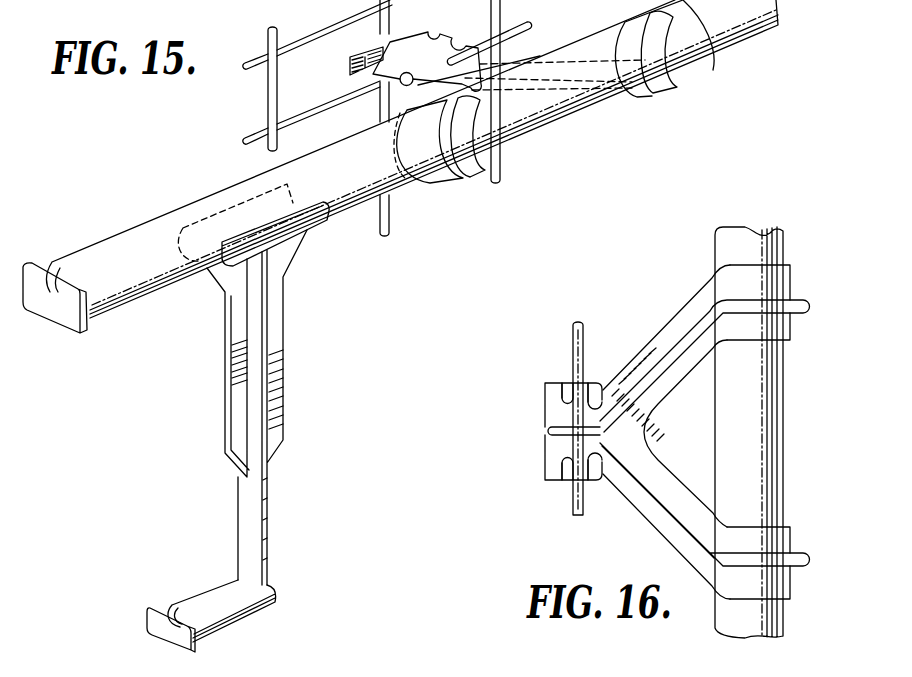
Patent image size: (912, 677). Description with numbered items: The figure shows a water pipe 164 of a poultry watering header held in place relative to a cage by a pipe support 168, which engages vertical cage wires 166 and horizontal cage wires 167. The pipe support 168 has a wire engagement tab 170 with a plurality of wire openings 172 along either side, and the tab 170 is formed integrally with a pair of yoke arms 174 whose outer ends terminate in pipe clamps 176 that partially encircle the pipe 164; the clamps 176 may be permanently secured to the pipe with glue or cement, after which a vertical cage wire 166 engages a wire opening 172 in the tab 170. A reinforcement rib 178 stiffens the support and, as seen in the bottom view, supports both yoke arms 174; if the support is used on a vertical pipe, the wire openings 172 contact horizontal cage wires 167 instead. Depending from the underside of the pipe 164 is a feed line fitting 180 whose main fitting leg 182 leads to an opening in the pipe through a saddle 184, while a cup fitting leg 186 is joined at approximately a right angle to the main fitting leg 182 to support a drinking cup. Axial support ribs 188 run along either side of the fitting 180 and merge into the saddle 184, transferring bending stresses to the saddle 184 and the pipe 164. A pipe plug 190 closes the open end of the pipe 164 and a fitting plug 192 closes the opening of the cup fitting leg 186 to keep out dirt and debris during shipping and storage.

In FIG. 15, the water pipe 164 is at (779, 20).
In FIG. 16, the water pipe 164 is at (775, 500).
In FIG. 16, the vertical cage wire 166 is at (565, 400).
In FIG. 15, the horizontal cage wire 167 is at (257, 132).
In FIG. 16, the horizontal cage wire 167 is at (572, 507).
In FIG. 15, the pipe support 168 is at (532, 48).
In FIG. 16, the pipe support 168 is at (659, 326).
In FIG. 15, the wire engagement tab 170 is at (403, 44).
In FIG. 16, the wire engagement tab 170 is at (558, 456).
In FIG. 15, the wire openings 172 is at (378, 78).
In FIG. 16, the wire openings 172 is at (567, 393).
In FIG. 15, the yoke arms 174 is at (397, 98).
In FIG. 16, the yoke arms 174 is at (638, 358).
In FIG. 15, the pipe clamps 176 is at (440, 182).
In FIG. 16, the pipe clamps 176 is at (808, 304).
In FIG. 15, the reinforcement rib 178 is at (465, 178).
In FIG. 16, the reinforcement rib 178 is at (655, 488).
In FIG. 15, the feed line fitting 180 is at (276, 495).
In FIG. 15, the main fitting leg 182 is at (238, 523).
In FIG. 15, the saddle 184 is at (320, 236).
In FIG. 15, the cup fitting leg 186 is at (255, 622).
In FIG. 15, the axial support ribs 188 is at (283, 352).
In FIG. 15, the pipe plug 190 is at (70, 323).
In FIG. 15, the fitting plug 192 is at (156, 606).